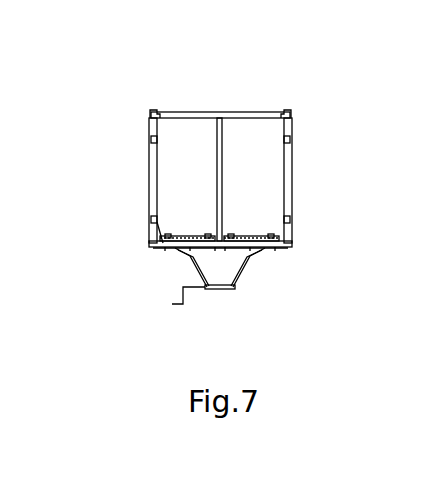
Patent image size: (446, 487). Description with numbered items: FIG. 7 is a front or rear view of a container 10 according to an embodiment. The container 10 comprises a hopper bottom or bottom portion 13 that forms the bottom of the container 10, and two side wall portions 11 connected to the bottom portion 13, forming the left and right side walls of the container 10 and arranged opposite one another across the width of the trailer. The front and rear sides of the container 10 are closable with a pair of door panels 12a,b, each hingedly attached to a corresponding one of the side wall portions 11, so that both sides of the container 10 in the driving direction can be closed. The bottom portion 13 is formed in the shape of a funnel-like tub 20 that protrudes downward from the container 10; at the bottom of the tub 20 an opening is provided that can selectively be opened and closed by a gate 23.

The container 10 is at (115, 70).
The side wall portion 11 is at (132, 183).
The door panels 12a,b is at (248, 128).
The bottom portion 13 is at (150, 253).
The funnel-like tub 20 is at (233, 265).
The gate 23 is at (218, 288).